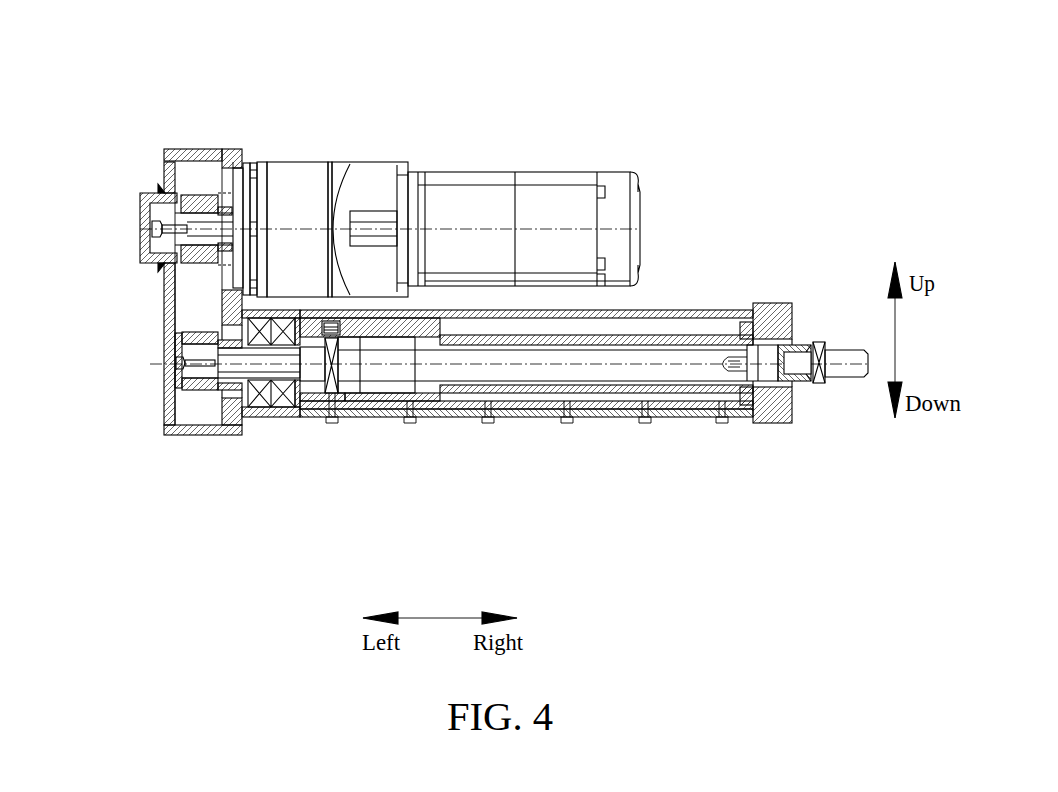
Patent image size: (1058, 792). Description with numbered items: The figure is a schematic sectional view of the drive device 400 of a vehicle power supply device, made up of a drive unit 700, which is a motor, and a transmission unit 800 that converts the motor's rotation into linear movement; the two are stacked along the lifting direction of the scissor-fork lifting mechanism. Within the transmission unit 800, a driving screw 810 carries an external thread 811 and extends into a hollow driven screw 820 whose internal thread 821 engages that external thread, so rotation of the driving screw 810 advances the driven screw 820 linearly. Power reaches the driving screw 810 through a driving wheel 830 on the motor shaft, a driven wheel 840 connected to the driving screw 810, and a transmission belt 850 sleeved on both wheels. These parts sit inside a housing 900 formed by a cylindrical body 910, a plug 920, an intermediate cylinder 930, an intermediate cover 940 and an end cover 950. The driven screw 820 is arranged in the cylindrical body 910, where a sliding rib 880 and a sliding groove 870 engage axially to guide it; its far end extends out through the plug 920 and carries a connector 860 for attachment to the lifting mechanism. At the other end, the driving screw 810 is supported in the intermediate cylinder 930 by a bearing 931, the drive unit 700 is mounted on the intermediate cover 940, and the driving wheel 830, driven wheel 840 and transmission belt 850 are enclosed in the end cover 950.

The drive device 400 is at (470, 284).
The drive unit 700 is at (492, 205).
The transmission unit 800 is at (398, 216).
The driving screw 810 is at (281, 362).
The external thread 811 is at (358, 393).
The driven screw 820 is at (513, 343).
The internal thread 821 is at (375, 393).
The driving wheel 830 is at (163, 157).
The driven wheel 840 is at (165, 320).
The transmission belt 850 is at (195, 295).
The connector 860 is at (843, 357).
The sliding groove 870 is at (427, 403).
The sliding rib 880 is at (455, 407).
The housing 900 is at (462, 425).
The cylindrical body 910 is at (522, 418).
The plug 920 is at (762, 403).
The intermediate cylinder 930 is at (253, 413).
The bearing 931 is at (287, 410).
The intermediate cover 940 is at (228, 435).
The end cover 950 is at (167, 435).